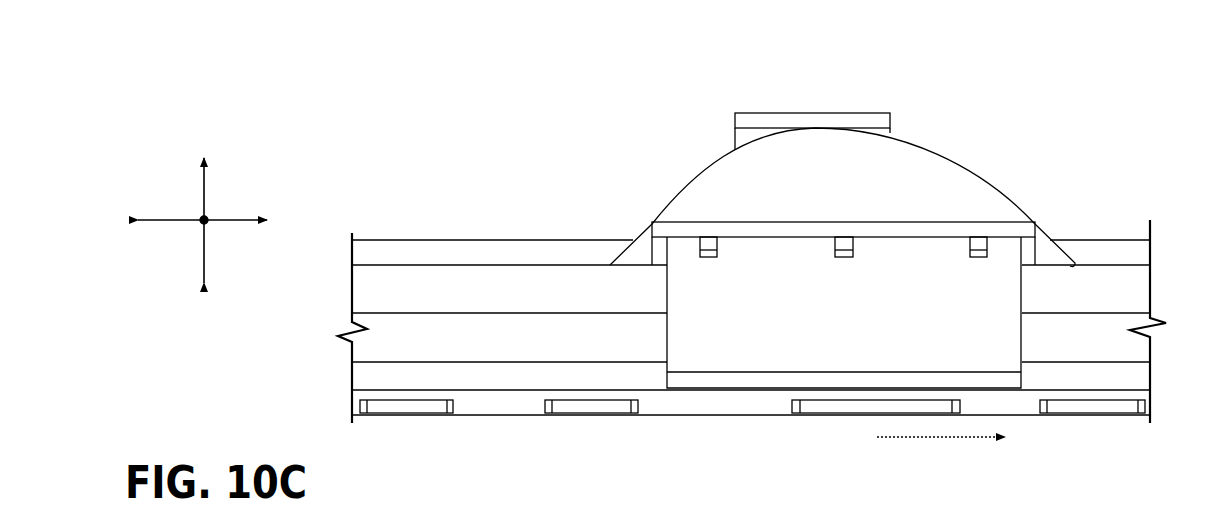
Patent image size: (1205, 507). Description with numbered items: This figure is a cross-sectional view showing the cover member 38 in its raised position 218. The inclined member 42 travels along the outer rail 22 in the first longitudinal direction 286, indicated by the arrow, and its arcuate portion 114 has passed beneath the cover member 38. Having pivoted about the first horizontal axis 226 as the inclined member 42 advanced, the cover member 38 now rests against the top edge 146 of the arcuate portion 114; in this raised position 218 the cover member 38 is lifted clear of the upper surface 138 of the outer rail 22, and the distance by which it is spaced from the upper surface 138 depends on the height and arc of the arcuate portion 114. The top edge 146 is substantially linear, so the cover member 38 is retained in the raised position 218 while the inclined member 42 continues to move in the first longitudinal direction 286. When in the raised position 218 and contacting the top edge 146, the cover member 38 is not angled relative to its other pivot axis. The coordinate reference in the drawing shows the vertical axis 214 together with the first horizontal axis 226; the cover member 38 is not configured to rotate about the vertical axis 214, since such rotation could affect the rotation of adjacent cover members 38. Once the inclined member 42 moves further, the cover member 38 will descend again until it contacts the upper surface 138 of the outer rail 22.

The outer rail 22 is at (510, 325).
The cover member 38 is at (775, 122).
The inclined member 42 is at (773, 330).
The arcuate portion 114 is at (933, 178).
The upper surface 138 is at (1090, 237).
The top edge 146 is at (828, 130).
The vertical axis 214 is at (203, 184).
The raised position 218 is at (842, 148).
The first horizontal axis 226 is at (210, 228).
The first longitudinal direction 286 is at (943, 437).